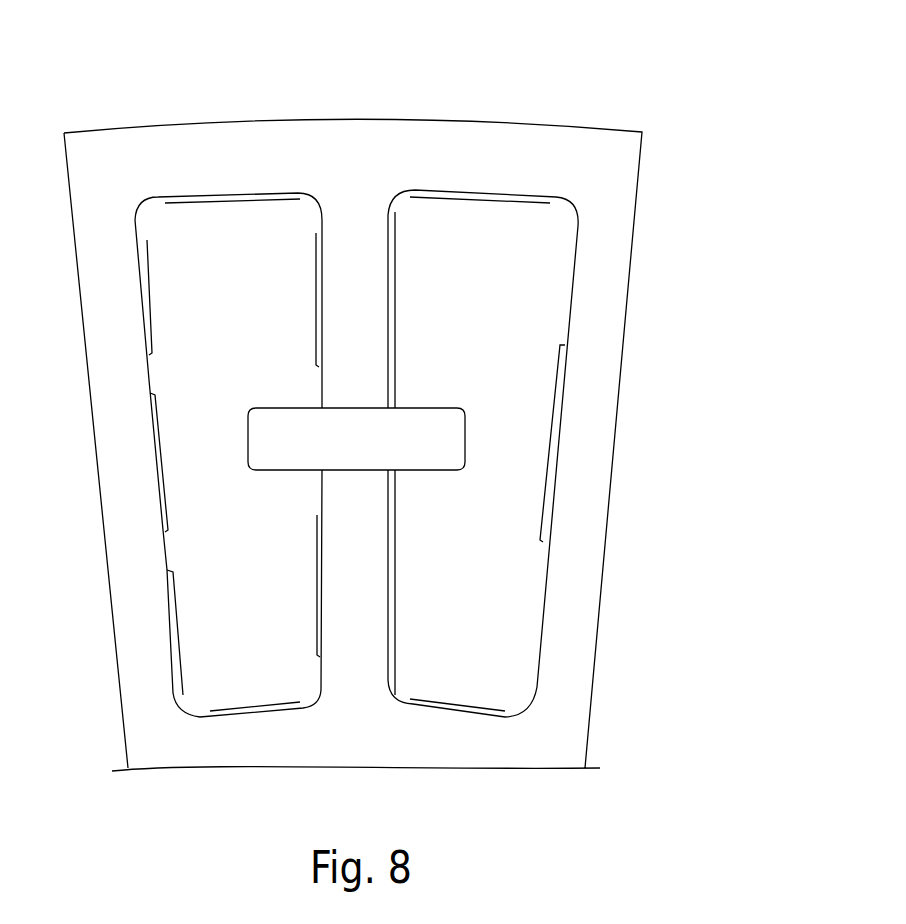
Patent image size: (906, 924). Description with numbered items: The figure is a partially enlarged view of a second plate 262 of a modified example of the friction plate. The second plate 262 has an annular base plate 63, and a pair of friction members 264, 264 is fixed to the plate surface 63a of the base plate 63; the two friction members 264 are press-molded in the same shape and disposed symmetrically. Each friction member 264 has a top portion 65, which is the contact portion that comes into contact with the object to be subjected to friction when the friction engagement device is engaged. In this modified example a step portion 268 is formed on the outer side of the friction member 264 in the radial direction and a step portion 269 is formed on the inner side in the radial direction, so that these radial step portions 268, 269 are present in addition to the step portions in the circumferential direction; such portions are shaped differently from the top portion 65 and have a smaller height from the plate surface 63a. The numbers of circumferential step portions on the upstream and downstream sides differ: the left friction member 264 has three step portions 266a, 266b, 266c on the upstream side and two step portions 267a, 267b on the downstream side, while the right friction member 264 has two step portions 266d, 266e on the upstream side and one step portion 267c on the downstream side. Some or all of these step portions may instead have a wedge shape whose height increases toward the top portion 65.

The second plate 262 is at (663, 78).
The base plate 63 is at (600, 124).
The plate surface 63a is at (613, 180).
The top portion 65 is at (530, 388).
The friction member 264 is at (477, 178).
The step portion 266a is at (140, 317).
The step portion 266b is at (153, 467).
The step portion 266c is at (170, 627).
The step portion 266d is at (390, 386).
The step portion 266e is at (388, 498).
The step portion 267a is at (325, 218).
The step portion 267b is at (320, 655).
The step portion 267c is at (550, 503).
The step portion 268 is at (220, 198).
The step portion 269 is at (240, 720).